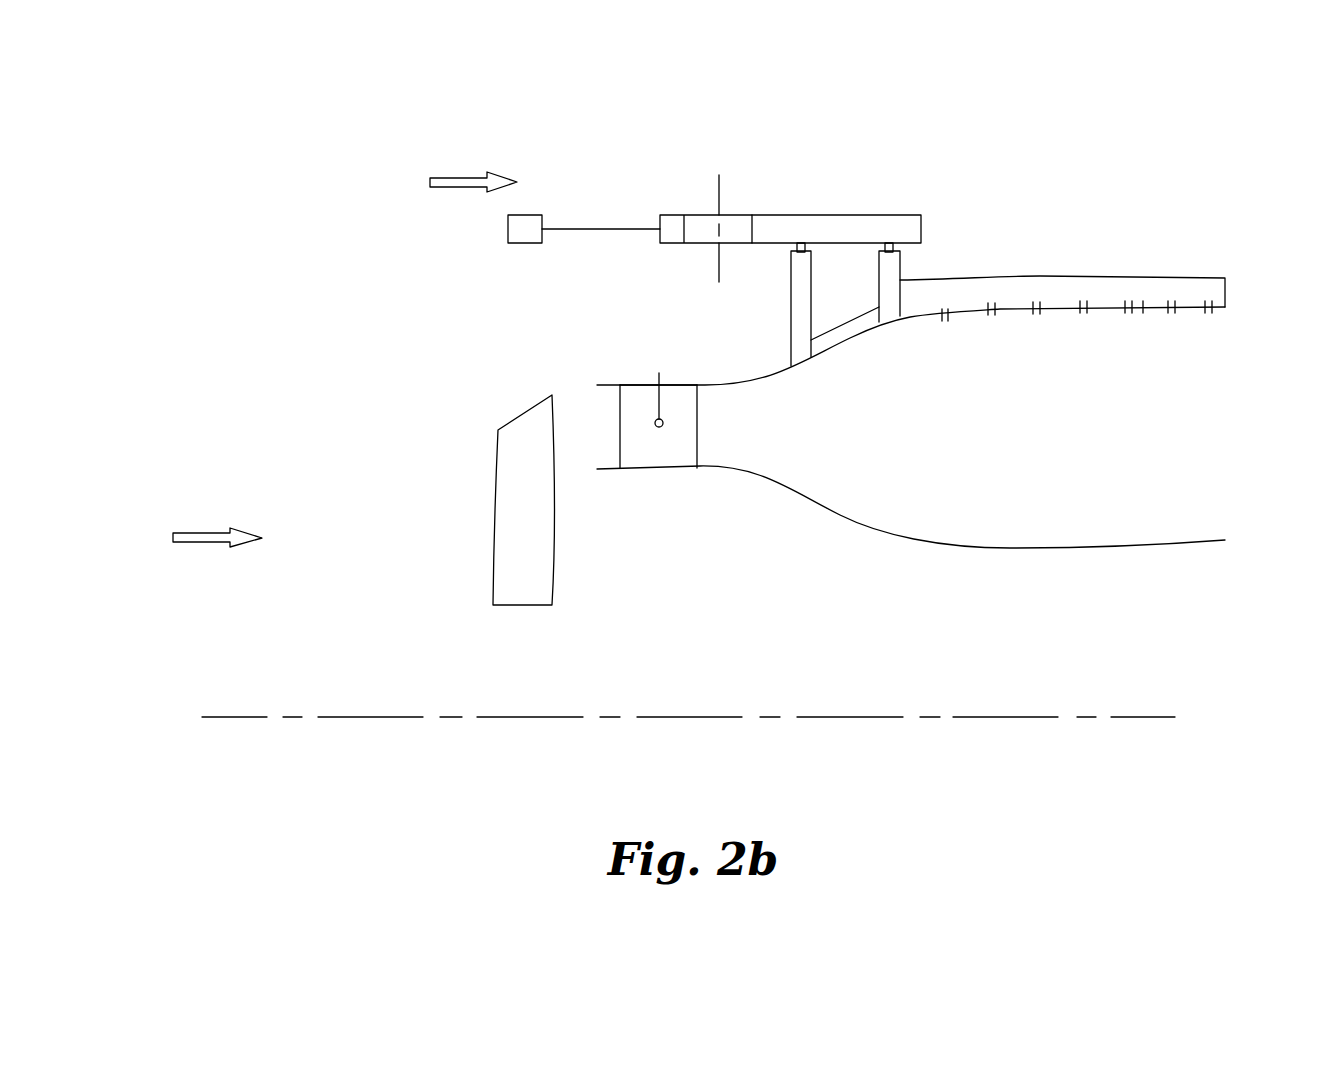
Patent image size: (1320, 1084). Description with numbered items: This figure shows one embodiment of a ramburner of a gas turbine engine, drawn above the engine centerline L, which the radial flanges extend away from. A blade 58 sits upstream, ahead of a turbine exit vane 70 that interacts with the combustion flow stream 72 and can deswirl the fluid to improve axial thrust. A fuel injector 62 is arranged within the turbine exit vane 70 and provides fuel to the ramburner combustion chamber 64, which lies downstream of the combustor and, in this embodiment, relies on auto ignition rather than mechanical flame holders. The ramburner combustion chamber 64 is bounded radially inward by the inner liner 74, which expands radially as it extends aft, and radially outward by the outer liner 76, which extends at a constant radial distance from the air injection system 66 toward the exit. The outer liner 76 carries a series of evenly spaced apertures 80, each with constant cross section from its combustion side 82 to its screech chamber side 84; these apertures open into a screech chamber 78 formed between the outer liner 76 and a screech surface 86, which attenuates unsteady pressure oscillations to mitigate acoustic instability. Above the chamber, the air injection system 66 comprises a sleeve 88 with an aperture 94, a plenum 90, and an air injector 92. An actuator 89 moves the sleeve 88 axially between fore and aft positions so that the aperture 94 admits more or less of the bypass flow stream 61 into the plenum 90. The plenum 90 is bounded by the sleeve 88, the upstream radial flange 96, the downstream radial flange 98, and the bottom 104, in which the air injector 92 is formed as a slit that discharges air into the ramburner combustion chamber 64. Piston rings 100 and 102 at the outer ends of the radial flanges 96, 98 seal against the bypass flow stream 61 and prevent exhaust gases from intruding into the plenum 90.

The fan blade 58 is at (500, 545).
The bypass flow stream 61 is at (458, 177).
The fuel injector 62 is at (655, 418).
The ramburner combustion chamber 64 is at (989, 483).
The air injection system 66 is at (903, 180).
The turbine exit vane 70 is at (632, 435).
The combustion flow stream 72 is at (200, 530).
The inner liner 74 is at (1135, 543).
The outer liner 76 is at (1150, 312).
The screech chamber 78 is at (1082, 292).
The apertures 80 is at (943, 322).
The combustion side 82 is at (1103, 318).
The screech chamber side 84 is at (1143, 305).
The screech surface 86 is at (1020, 277).
The sleeve 88 is at (804, 215).
The actuator 89 is at (507, 232).
The plenum 90 is at (831, 299).
The air injector 92 is at (838, 352).
The aperture 94 is at (700, 215).
The upstream radial flange 96 is at (791, 305).
The downstream radial flange 98 is at (878, 293).
The piston ring 100 is at (797, 258).
The piston ring 102 is at (900, 262).
The bottom 104 is at (822, 362).
The centerline L is at (1150, 716).